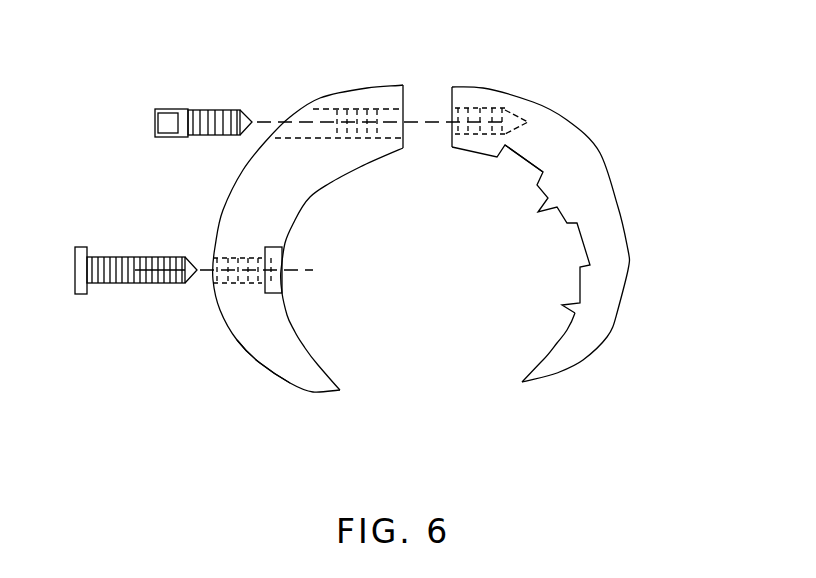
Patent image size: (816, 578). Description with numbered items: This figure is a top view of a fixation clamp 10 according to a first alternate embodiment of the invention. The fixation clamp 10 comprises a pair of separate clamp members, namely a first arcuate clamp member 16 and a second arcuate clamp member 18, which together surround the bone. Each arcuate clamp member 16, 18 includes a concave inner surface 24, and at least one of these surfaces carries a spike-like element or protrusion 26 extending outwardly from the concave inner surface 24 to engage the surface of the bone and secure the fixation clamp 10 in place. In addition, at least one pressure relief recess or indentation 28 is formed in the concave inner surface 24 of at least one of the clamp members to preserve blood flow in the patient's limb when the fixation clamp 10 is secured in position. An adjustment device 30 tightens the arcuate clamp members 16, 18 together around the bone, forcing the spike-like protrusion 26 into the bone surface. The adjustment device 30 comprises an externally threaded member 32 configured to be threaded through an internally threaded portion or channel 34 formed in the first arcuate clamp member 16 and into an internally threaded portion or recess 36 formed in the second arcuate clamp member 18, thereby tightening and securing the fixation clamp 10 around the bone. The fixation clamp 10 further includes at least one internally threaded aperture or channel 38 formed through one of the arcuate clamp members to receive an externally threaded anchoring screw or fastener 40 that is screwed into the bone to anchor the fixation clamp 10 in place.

The fixation clamp 10 is at (360, 210).
The first arcuate clamp member 16 is at (374, 242).
The second arcuate clamp member 18 is at (567, 234).
The concave inner surface 24 is at (288, 197).
The spike-like element or protrusion 26 is at (555, 208).
The pressure relief recess or indentation 28 is at (520, 168).
The adjustment device 30 is at (342, 108).
The externally threaded member 32 is at (218, 109).
The internally threaded portion or channel 34 is at (355, 108).
The internally threaded portion or recess 36 is at (477, 102).
The internally threaded aperture or channel 38 is at (232, 252).
The externally threaded anchoring screw or fastener 40 is at (75, 248).